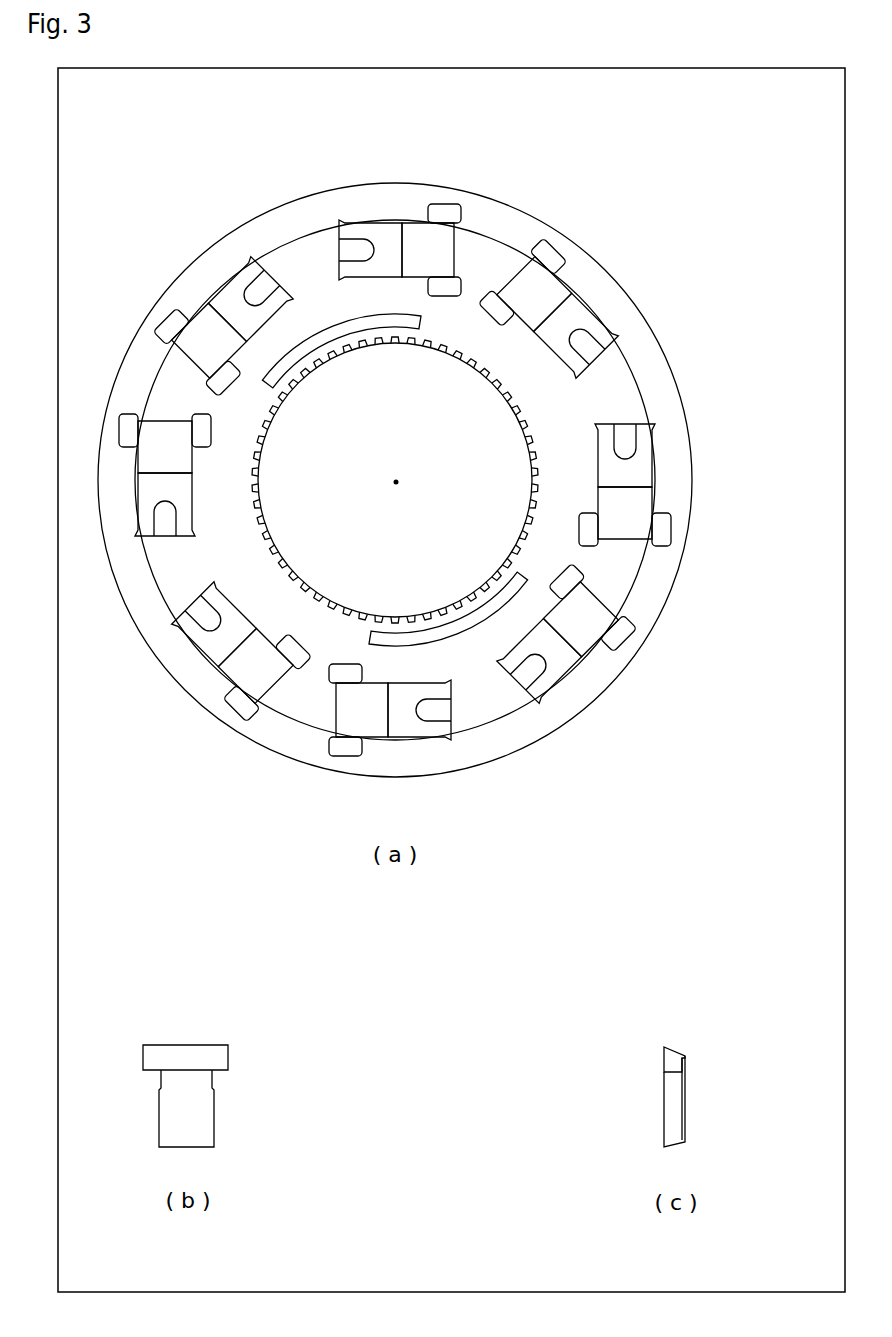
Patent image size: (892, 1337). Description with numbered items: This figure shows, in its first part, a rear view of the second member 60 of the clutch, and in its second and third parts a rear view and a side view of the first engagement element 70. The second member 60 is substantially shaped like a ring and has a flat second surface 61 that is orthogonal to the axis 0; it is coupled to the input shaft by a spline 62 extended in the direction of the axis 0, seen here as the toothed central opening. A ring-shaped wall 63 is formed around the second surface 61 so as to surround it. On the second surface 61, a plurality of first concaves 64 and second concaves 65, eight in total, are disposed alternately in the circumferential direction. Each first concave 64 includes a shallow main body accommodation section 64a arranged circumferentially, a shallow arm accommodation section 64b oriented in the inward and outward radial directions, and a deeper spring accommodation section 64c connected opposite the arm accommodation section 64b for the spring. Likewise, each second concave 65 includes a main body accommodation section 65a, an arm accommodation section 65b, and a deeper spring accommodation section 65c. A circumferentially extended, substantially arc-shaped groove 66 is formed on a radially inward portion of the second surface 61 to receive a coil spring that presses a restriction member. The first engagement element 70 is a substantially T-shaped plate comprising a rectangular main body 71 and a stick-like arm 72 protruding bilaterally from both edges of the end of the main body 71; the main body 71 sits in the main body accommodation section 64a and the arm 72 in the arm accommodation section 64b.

The second member 60 is at (694, 158).
The second surface 61 is at (633, 377).
The spline 62 is at (293, 571).
The axis 0 is at (403, 478).
The ring-shaped wall 63 is at (638, 545).
The first concave 64 is at (375, 217).
The main body accommodation section 64a is at (406, 265).
The arm accommodation section 64b is at (444, 175).
The spring accommodation section 64c is at (346, 218).
The second concave 65 is at (586, 287).
The main body accommodation section 65a is at (534, 294).
The arm accommodation section 65b is at (548, 256).
The spring accommodation section 65c is at (574, 334).
The arc-shaped groove 66 is at (372, 322).
The first engagement element 70 is at (452, 1052).
The main body 71 is at (202, 1127).
The arm 72 is at (218, 1057).